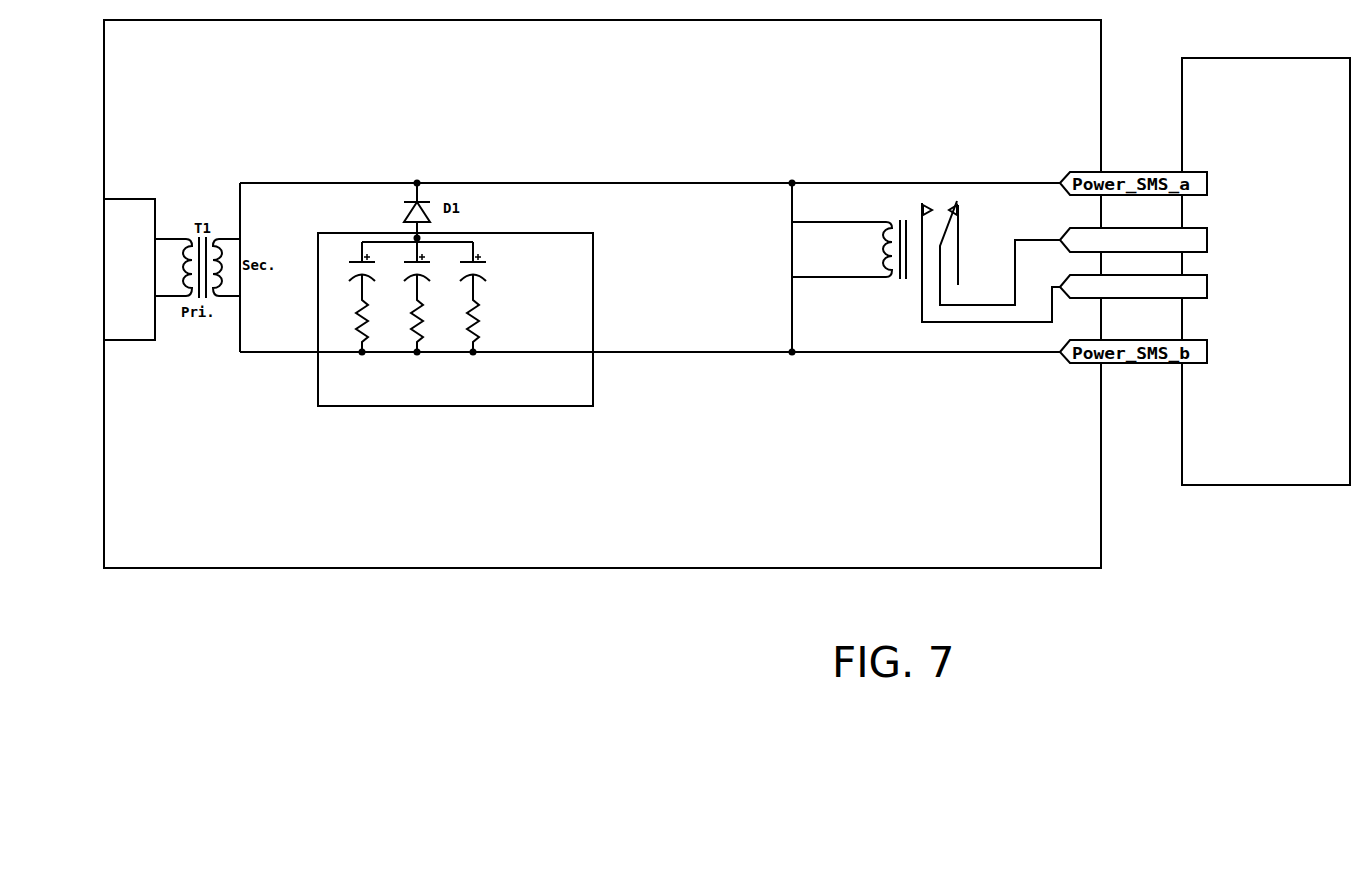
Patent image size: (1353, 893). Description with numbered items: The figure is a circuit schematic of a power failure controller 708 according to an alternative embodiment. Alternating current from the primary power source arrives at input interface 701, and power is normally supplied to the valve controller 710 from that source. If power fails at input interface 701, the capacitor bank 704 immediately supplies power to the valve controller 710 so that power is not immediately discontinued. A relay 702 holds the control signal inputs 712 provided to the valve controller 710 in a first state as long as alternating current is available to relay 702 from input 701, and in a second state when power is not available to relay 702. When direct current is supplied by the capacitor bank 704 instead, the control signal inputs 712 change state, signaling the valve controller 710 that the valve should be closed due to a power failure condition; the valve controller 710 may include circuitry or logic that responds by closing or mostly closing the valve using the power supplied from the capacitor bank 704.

The input interface 701 is at (133, 199).
The relay 702 is at (943, 164).
The capacitor bank 704 is at (593, 291).
The power failure controller 708 is at (651, 600).
The valve controller 710 is at (1266, 485).
The control signal inputs 712 is at (1227, 239).